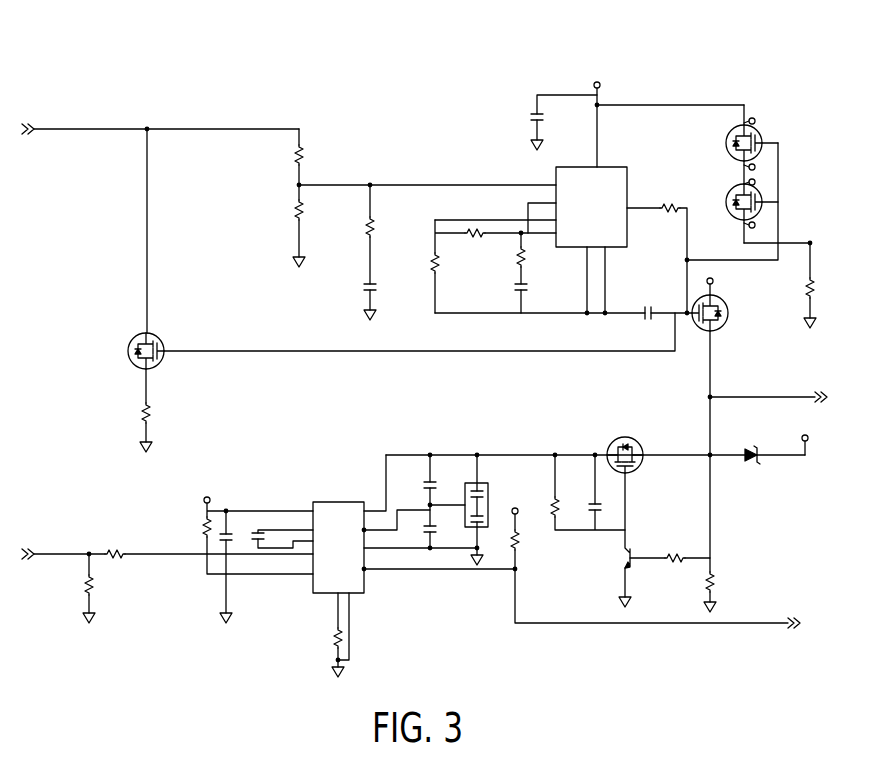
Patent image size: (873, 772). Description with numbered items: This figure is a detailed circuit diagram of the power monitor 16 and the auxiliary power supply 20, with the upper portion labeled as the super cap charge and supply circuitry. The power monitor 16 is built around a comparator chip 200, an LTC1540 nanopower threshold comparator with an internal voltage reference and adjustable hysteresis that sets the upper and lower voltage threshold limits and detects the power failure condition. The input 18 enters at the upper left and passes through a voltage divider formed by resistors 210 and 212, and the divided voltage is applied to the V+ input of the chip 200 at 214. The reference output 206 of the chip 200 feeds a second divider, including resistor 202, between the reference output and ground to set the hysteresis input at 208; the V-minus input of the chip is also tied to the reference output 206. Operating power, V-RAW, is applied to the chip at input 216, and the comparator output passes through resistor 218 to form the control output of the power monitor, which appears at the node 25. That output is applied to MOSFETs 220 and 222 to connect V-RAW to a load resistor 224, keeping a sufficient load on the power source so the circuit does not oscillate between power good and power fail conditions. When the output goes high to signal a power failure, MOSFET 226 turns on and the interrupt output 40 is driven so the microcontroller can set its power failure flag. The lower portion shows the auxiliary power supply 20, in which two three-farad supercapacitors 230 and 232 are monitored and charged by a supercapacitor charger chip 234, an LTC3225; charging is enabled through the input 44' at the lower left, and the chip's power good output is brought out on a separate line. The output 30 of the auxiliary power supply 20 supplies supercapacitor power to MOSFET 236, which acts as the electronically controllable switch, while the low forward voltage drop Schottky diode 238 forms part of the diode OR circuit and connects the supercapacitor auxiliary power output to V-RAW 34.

The power monitor 16 is at (423, 119).
The input 18 is at (87, 128).
The auxiliary power supply 20 is at (357, 467).
The node 25 is at (686, 261).
The output of the auxiliary power supply 30 is at (532, 454).
The V-RAW 34 is at (802, 437).
The interrupt output 40 is at (773, 396).
The input 44' is at (167, 562).
The comparator chip 200 is at (612, 166).
The resistor 202 is at (473, 232).
The reference output 206 is at (511, 232).
The hysteresis input 208 is at (518, 219).
The resistor 210 is at (297, 158).
The resistor 212 is at (297, 212).
The V+ input 214 is at (445, 184).
The input 216 is at (596, 146).
The resistor 218 is at (660, 206).
The MOSFET 220 is at (741, 124).
The MOSFET 222 is at (726, 201).
The load resistor 224 is at (806, 282).
The MOSFET 226 is at (720, 332).
The supercapacitor 230 is at (424, 484).
The supercapacitor 232 is at (438, 532).
The supercapacitor charger chip 234 is at (327, 501).
The MOSFET 236 is at (623, 436).
The Schottky diode 238 is at (758, 465).